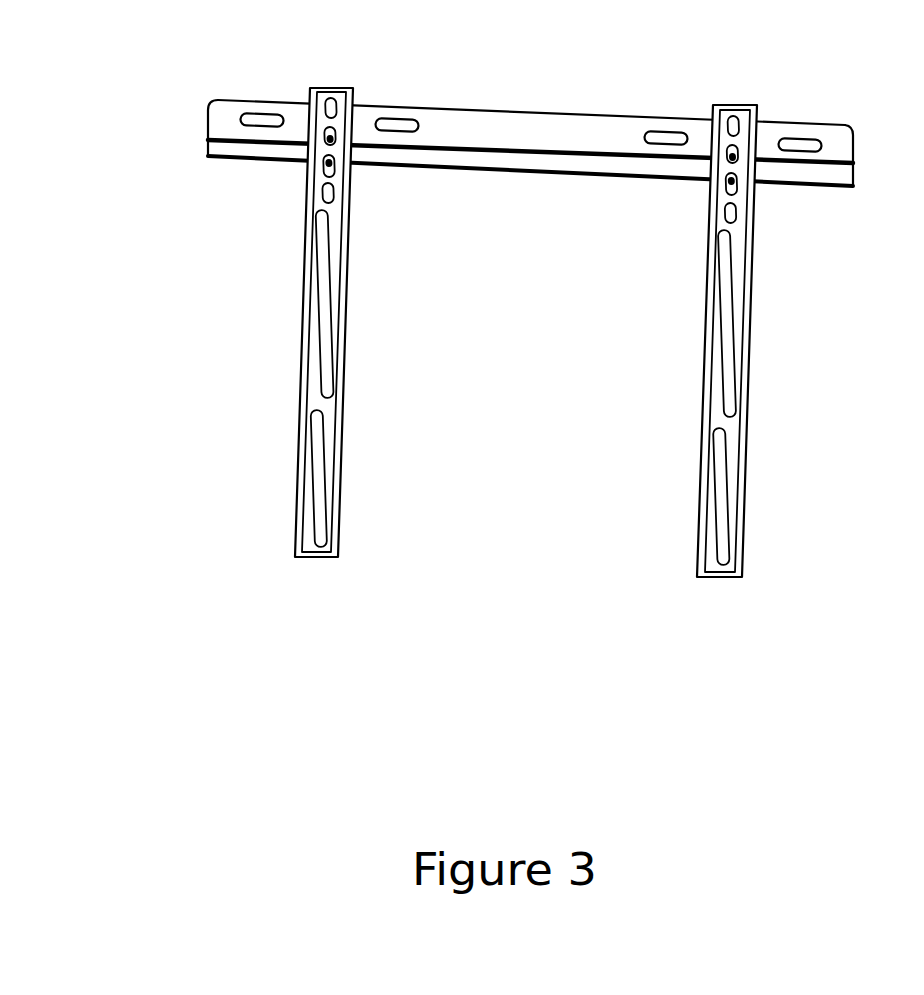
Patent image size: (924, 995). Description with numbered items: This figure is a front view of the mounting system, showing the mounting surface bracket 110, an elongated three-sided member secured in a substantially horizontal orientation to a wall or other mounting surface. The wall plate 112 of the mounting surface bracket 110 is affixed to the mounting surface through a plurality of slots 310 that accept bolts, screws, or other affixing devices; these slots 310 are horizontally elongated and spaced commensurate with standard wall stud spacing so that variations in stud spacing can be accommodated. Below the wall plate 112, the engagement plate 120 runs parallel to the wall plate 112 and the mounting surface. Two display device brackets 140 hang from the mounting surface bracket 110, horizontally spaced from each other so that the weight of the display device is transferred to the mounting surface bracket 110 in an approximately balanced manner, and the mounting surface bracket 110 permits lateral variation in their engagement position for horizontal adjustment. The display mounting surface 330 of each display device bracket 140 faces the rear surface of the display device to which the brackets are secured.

The mounting surface bracket 110 is at (597, 138).
The wall plate 112 is at (472, 125).
The engagement plate 120 is at (500, 152).
The slots 310 is at (255, 112).
The display device bracket 140 is at (313, 402).
The display mounting surface 330 is at (344, 279).